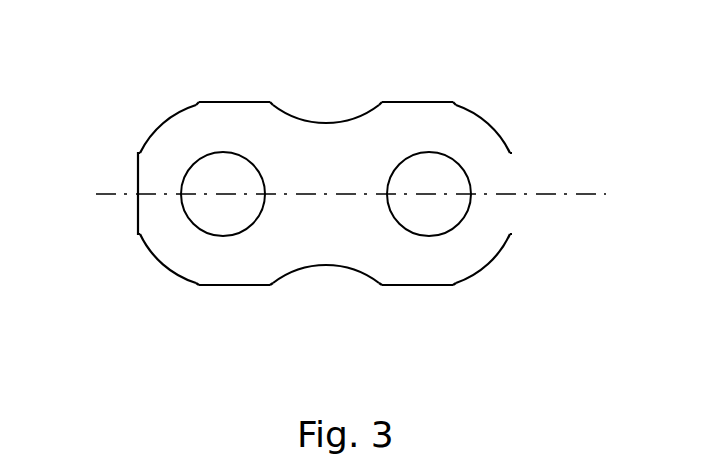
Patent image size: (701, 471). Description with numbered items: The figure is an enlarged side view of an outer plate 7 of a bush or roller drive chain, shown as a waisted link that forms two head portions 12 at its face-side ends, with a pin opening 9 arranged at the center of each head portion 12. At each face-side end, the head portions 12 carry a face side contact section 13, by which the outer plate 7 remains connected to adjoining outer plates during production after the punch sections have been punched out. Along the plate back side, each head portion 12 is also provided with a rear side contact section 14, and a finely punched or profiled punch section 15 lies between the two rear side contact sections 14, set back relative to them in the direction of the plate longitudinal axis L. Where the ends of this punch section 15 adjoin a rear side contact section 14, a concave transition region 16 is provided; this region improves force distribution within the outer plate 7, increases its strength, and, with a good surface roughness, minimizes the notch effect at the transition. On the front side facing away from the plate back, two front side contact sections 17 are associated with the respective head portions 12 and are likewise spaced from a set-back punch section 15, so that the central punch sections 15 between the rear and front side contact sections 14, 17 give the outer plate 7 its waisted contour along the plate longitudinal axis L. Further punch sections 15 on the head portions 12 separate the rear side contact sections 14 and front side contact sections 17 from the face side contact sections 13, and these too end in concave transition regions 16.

The outer plate 7 is at (305, 180).
The pin openings 9 is at (212, 175).
The head portions 12 is at (175, 250).
The face side contact section 13 is at (137, 205).
The rear side contact section 14 is at (240, 101).
The punch section 15 is at (337, 121).
The concave transition region 16 is at (275, 103).
The front side contact sections 17 is at (242, 287).
The plate longitudinal axis L is at (592, 190).